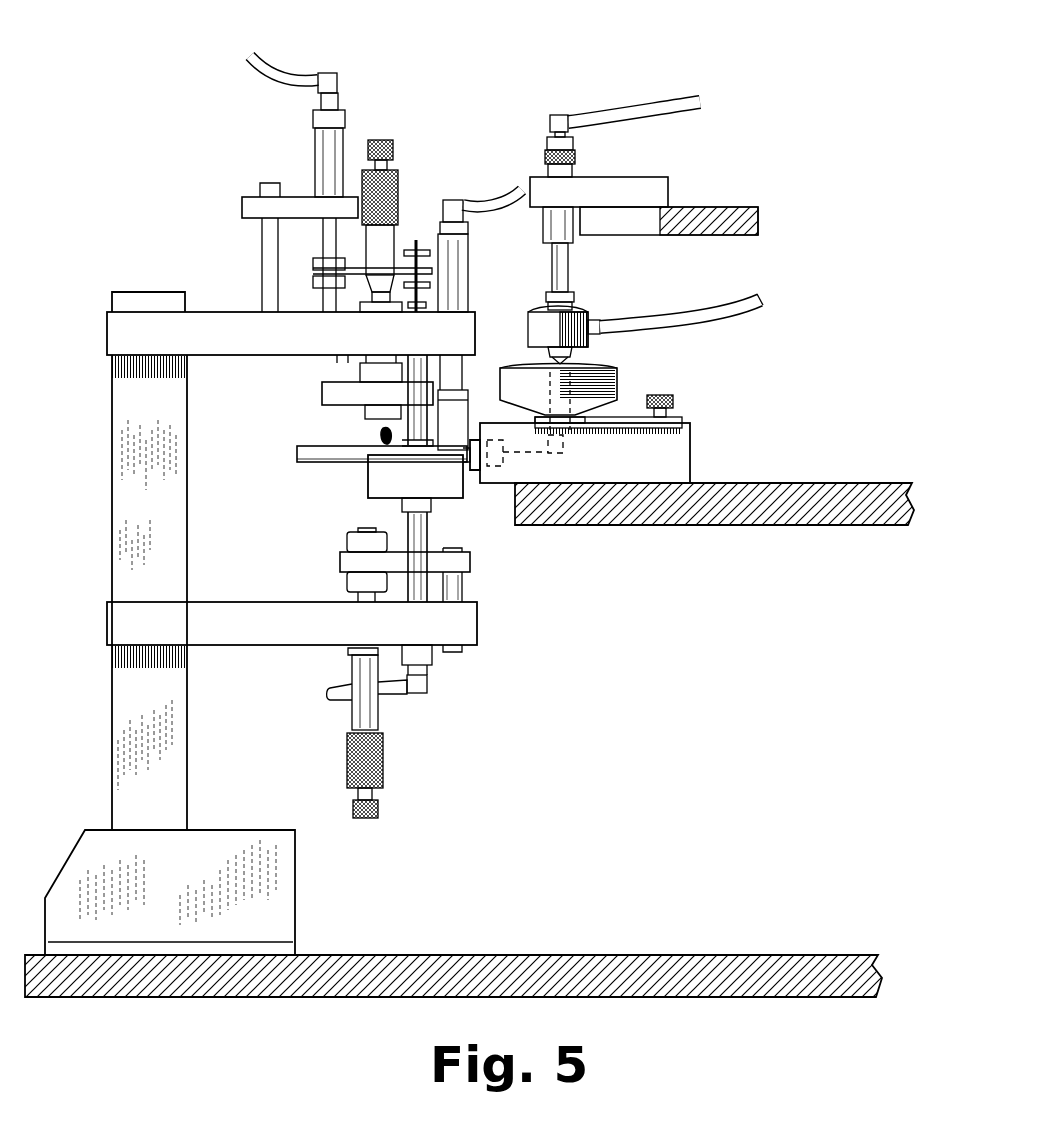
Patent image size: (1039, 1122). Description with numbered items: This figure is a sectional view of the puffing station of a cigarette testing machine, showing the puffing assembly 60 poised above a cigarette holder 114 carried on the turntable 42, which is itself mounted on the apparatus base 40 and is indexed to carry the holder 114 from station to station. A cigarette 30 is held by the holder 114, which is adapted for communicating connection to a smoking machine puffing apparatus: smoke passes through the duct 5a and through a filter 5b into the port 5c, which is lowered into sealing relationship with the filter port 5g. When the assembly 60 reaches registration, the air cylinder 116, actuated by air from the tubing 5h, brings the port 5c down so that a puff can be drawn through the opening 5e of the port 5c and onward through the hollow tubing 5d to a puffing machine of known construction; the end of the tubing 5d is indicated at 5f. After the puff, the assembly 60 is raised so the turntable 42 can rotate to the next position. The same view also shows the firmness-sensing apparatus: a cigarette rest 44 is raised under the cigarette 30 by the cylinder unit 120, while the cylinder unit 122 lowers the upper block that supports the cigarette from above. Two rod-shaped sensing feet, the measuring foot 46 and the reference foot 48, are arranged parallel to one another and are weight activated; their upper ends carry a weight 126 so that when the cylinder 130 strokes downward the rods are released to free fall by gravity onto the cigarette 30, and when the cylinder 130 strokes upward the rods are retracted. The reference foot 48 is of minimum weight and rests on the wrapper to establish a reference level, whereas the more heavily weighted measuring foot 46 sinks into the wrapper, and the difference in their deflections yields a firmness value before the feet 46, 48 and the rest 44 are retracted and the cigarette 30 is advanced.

The cigarette 30 is at (311, 446).
The apparatus base 40 is at (576, 953).
The turntable 42 is at (612, 526).
The cigarette rest 44 is at (368, 490).
The measuring foot 46 is at (381, 434).
The reference foot 48 is at (420, 425).
The assembly 60 is at (690, 207).
The holder 114 is at (692, 452).
The air cylinder 116 is at (576, 174).
The cylinder unit 120 is at (440, 585).
The cylinder unit 122 is at (469, 272).
The weight 126 is at (417, 248).
The cylinder 130 is at (343, 138).
The duct 5a is at (532, 462).
The filter 5b is at (618, 384).
The port 5c is at (552, 356).
The tubing 5d is at (676, 314).
The opening 5e is at (566, 366).
The hose end 5f is at (763, 300).
The filter port 5g is at (604, 368).
The tubing 5h is at (616, 115).